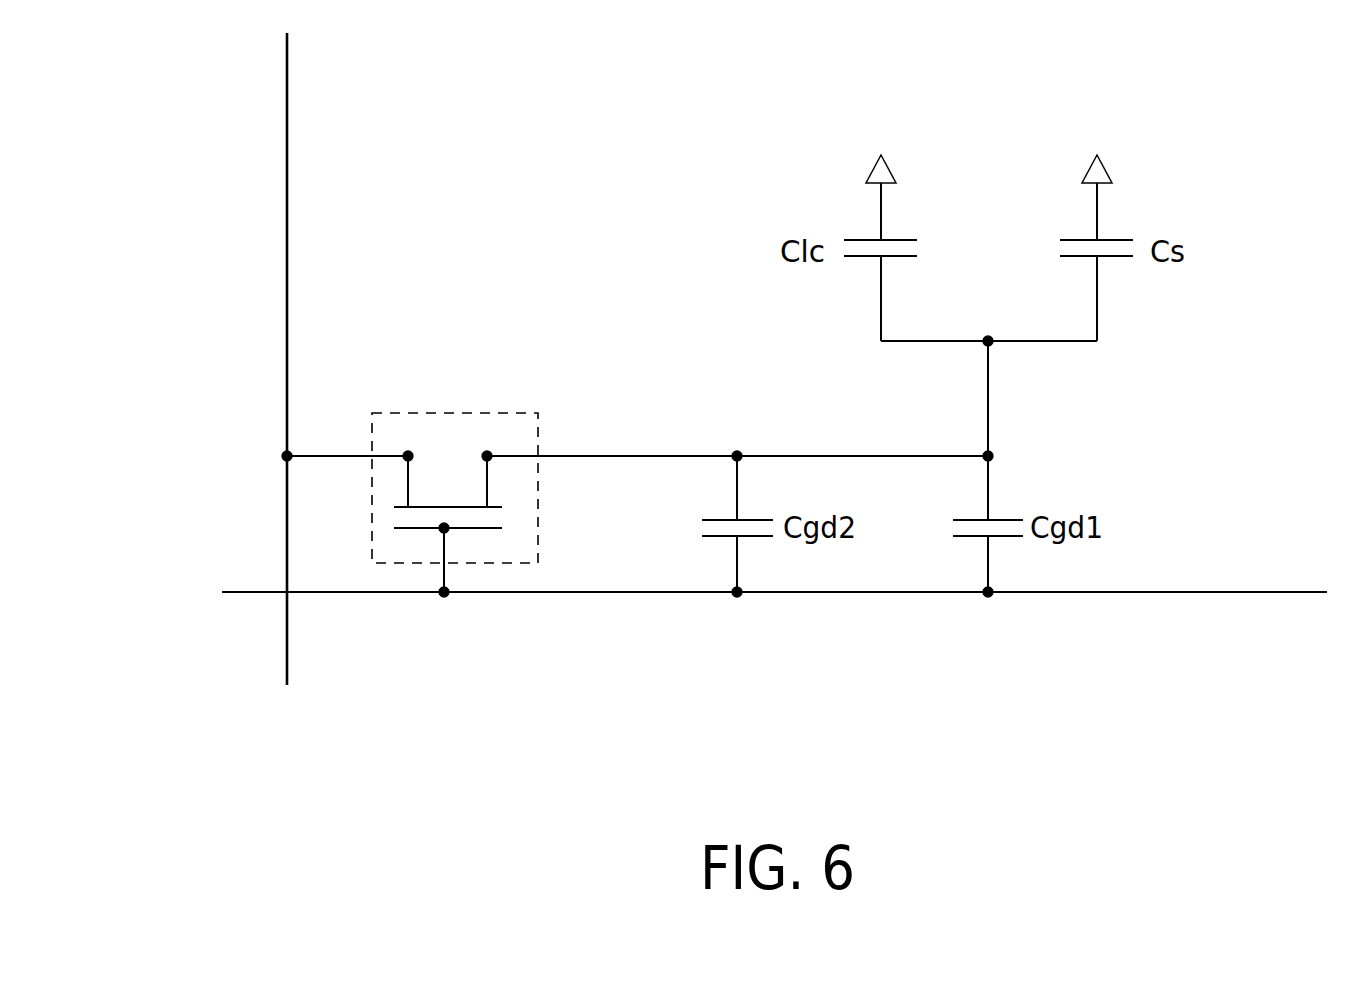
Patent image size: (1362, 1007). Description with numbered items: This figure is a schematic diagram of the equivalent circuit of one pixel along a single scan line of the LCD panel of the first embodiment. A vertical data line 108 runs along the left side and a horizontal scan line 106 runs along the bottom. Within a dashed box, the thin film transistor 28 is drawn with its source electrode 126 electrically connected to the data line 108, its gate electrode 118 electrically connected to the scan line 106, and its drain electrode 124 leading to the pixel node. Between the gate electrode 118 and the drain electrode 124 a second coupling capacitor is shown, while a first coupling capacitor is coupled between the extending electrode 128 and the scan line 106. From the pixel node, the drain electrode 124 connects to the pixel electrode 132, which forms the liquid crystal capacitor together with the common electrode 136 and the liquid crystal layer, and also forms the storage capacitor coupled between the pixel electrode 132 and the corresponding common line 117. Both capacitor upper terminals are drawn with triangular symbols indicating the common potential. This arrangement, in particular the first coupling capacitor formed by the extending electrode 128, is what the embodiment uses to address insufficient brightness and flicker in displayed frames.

The data line 108 is at (287, 190).
The scan line 106 is at (973, 538).
The thin film transistor 28 is at (487, 565).
The source electrode 126 is at (408, 456).
The drain electrode 124 is at (487, 456).
The gate electrode 118 is at (444, 530).
The extending electrode 128 is at (1008, 520).
The common electrode 136 is at (860, 240).
The common line 117 is at (1117, 240).
The pixel electrode 132 is at (861, 256).